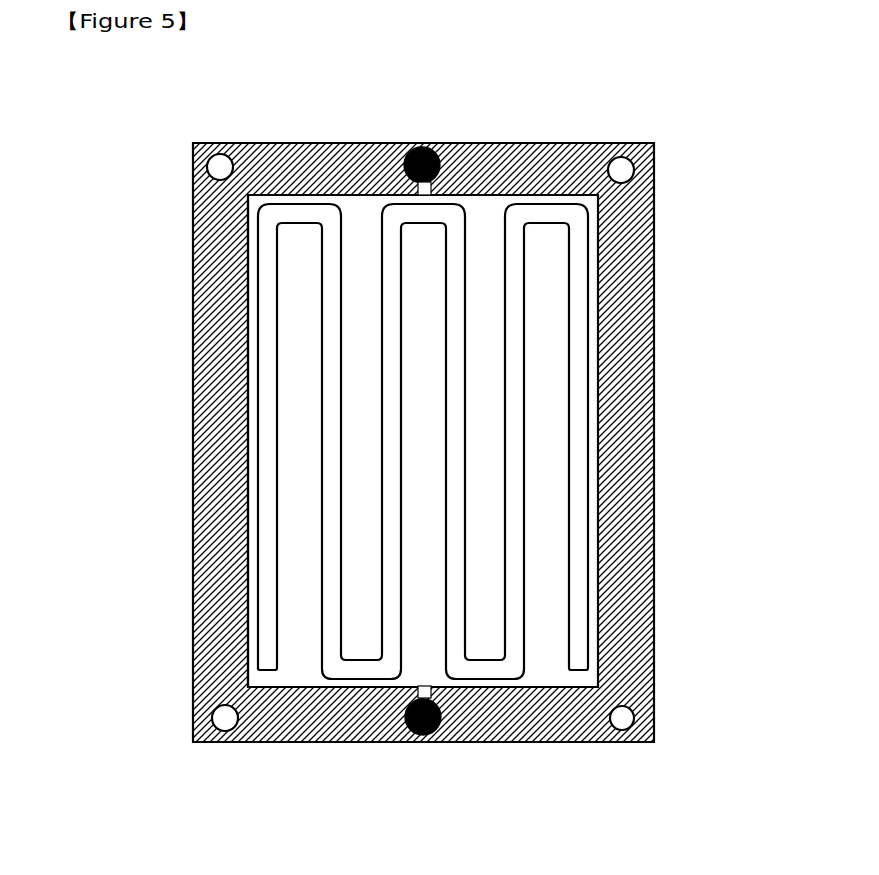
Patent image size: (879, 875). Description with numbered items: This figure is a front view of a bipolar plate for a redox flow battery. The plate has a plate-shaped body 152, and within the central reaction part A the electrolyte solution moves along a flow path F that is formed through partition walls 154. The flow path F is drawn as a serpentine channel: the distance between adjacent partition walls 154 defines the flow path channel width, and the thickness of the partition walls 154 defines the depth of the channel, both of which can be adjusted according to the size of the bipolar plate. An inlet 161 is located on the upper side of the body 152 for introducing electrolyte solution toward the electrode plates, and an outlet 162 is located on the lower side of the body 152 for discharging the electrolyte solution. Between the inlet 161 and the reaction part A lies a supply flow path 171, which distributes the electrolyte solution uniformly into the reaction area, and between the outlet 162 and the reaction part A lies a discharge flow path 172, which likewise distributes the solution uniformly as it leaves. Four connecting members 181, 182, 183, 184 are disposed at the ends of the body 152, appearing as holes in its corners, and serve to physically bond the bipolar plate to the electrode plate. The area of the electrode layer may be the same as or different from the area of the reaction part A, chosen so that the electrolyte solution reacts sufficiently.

The body 152 is at (655, 395).
The partition walls 154 is at (587, 528).
The inlet 161 is at (426, 148).
The outlet 162 is at (412, 735).
The supply flow path 171 is at (438, 185).
The discharge flow path 172 is at (433, 698).
The connecting member 181 is at (206, 166).
The connecting member 182 is at (654, 170).
The connecting member 183 is at (212, 720).
The connecting member 184 is at (638, 710).
The reaction part A is at (246, 268).
The flow path F is at (358, 460).